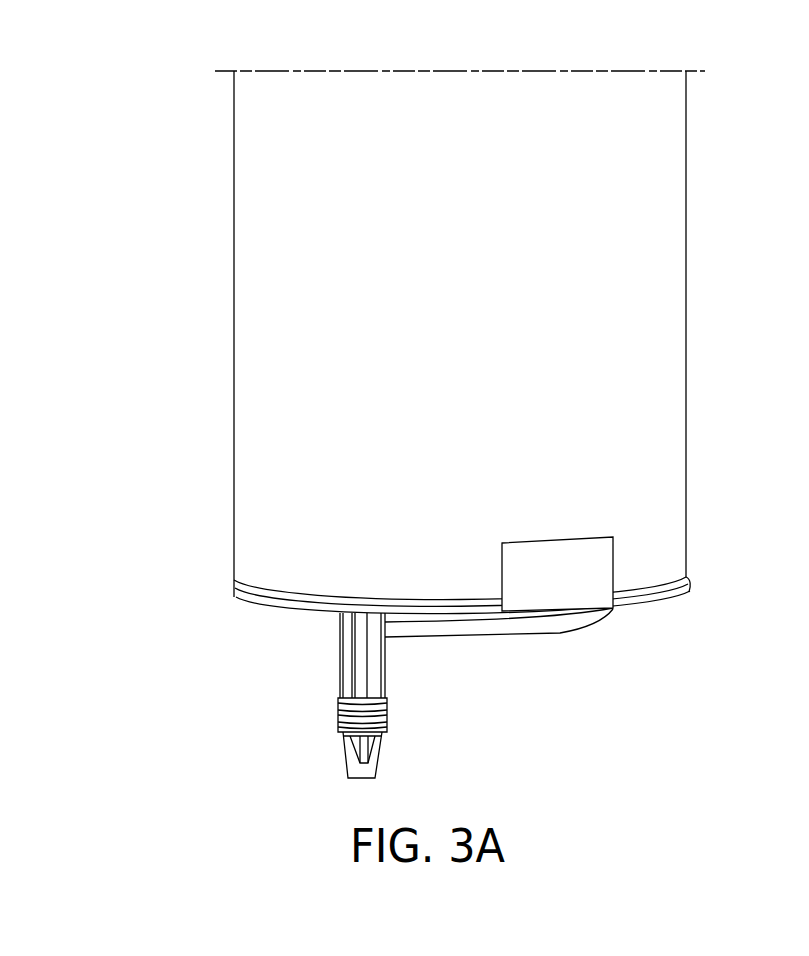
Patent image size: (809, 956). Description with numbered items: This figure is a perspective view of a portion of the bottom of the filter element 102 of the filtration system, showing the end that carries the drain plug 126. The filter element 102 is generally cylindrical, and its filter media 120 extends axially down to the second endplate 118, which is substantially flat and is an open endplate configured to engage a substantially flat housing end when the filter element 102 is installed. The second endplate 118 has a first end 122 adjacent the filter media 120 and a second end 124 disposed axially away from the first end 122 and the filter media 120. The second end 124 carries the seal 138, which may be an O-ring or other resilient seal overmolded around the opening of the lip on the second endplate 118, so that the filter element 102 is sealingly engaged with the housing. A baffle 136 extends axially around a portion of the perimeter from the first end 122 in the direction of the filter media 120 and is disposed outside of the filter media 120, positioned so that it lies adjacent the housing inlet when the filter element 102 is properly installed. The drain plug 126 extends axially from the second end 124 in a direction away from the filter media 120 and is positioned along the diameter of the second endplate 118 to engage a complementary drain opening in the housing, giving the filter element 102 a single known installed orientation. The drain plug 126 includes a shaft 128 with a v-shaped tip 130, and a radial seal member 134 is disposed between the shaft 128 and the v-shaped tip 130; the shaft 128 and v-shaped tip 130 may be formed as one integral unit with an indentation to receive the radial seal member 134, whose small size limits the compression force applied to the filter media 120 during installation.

The filter element 102 is at (206, 78).
The second endplate 118 is at (689, 577).
The filter media 120 is at (234, 297).
The first end 122 is at (233, 580).
The second end 124 is at (254, 604).
The drain plug 126 is at (331, 673).
The shaft 128 is at (366, 675).
The v-shaped tip 130 is at (376, 778).
The radial seal member 134 is at (338, 712).
The baffle 136 is at (582, 592).
The seal 138 is at (470, 637).